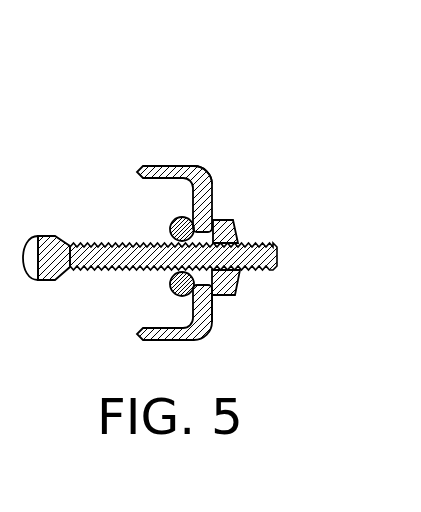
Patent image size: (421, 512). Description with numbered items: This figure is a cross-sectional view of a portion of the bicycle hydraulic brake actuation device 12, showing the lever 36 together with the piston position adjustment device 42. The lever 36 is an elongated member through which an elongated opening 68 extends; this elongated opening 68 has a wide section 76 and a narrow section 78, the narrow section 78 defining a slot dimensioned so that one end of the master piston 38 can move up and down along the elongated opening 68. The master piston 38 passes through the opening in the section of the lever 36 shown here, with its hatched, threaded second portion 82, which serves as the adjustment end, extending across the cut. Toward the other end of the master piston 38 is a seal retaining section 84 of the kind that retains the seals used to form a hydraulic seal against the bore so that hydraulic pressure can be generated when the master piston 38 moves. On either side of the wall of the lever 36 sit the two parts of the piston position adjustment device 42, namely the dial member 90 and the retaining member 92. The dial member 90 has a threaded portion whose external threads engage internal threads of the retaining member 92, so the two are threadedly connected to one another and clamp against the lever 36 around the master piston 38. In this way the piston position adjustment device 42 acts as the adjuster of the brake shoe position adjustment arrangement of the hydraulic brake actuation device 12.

The hydraulic brake actuation device 12 is at (92, 78).
The lever 36 is at (156, 166).
The master piston 38 is at (45, 280).
The piston position adjustment device 42 is at (285, 308).
The elongated opening 68 is at (179, 176).
The wide section 76 is at (186, 187).
The narrow section 78 is at (216, 222).
The second portion 82 is at (112, 272).
The seal retaining sections 84 is at (45, 237).
The dial member 90 is at (239, 284).
The retaining member 92 is at (209, 306).